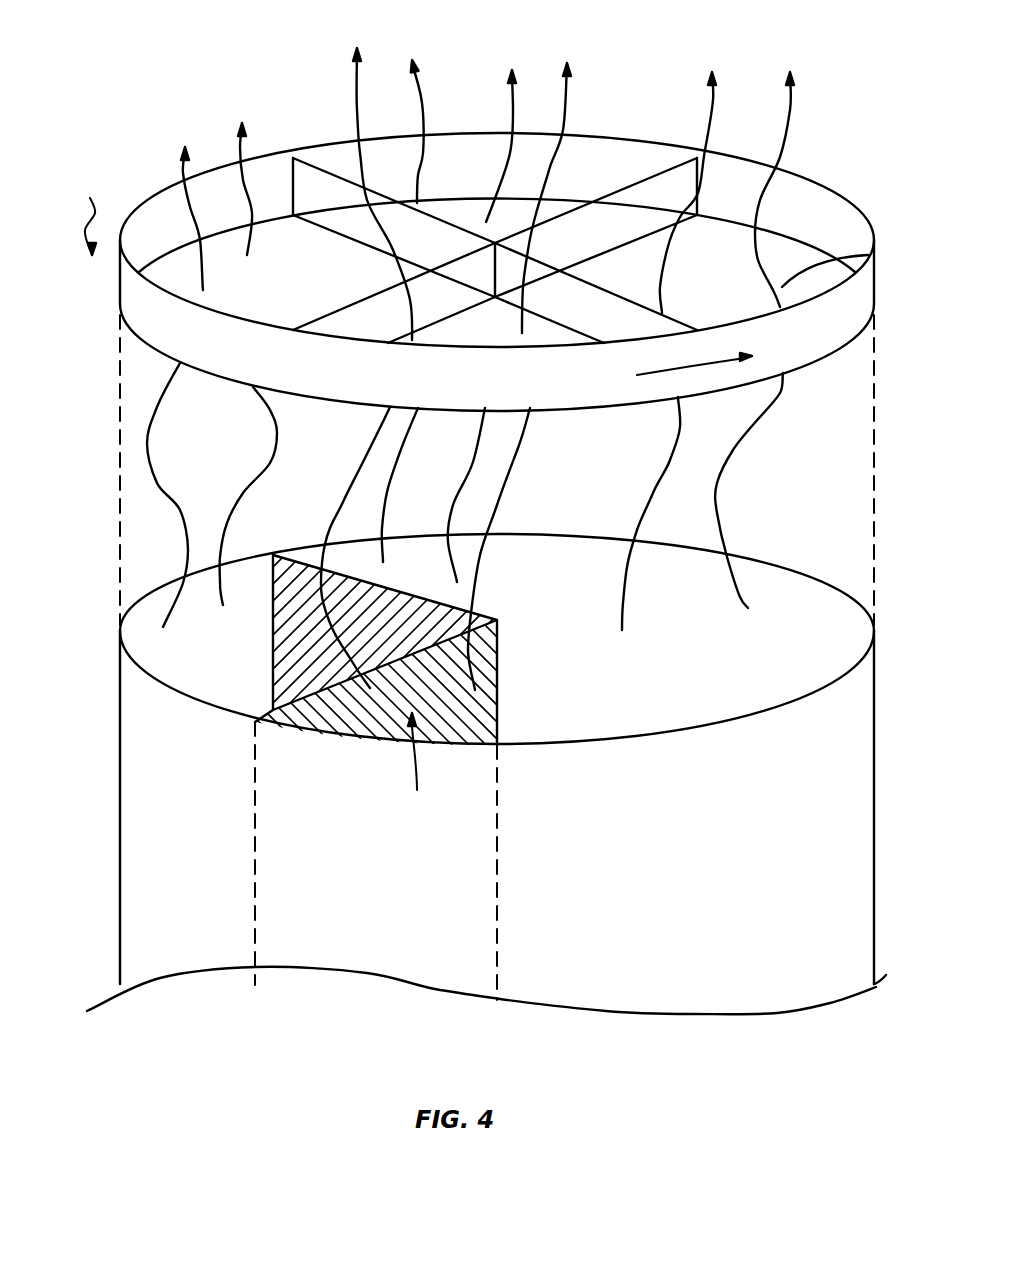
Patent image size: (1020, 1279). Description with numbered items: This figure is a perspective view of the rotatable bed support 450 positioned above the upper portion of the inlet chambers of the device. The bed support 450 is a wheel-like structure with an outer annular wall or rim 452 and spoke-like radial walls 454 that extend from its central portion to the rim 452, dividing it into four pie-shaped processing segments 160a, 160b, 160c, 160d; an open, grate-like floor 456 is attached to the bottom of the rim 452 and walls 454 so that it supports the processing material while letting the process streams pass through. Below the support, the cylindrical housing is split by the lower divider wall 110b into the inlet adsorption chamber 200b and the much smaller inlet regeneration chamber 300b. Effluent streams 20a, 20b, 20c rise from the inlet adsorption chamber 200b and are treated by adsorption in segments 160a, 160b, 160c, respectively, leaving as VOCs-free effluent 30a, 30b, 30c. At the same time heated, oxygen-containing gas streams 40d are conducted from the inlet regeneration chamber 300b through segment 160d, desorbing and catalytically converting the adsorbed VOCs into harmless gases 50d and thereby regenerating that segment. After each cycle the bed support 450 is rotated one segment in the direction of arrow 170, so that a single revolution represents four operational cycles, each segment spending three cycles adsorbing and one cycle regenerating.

The bed support 450 is at (78, 213).
The outer annular wall or rim 452 is at (832, 190).
The spoke-like radial walls 454 is at (642, 197).
The open grate-like floor 456 is at (873, 253).
The processing segment 160a is at (512, 340).
The processing segment 160b is at (732, 288).
The processing segment 160c is at (480, 225).
The processing segment 160d is at (322, 290).
The arrow 170 is at (668, 374).
The harmless gases 50d is at (240, 147).
The VOCs-free effluent 30a is at (355, 103).
The VOCs-free effluent 30b is at (788, 104).
The VOCs-free effluent 30c is at (513, 110).
The gas streams 40d is at (273, 447).
The effluent stream 20a is at (343, 500).
The effluent stream 20b is at (743, 600).
The effluent stream 20c is at (458, 500).
The inlet adsorption chamber 200b is at (745, 700).
The inlet regeneration chamber 300b is at (197, 677).
The lower divider wall 110b is at (388, 770).